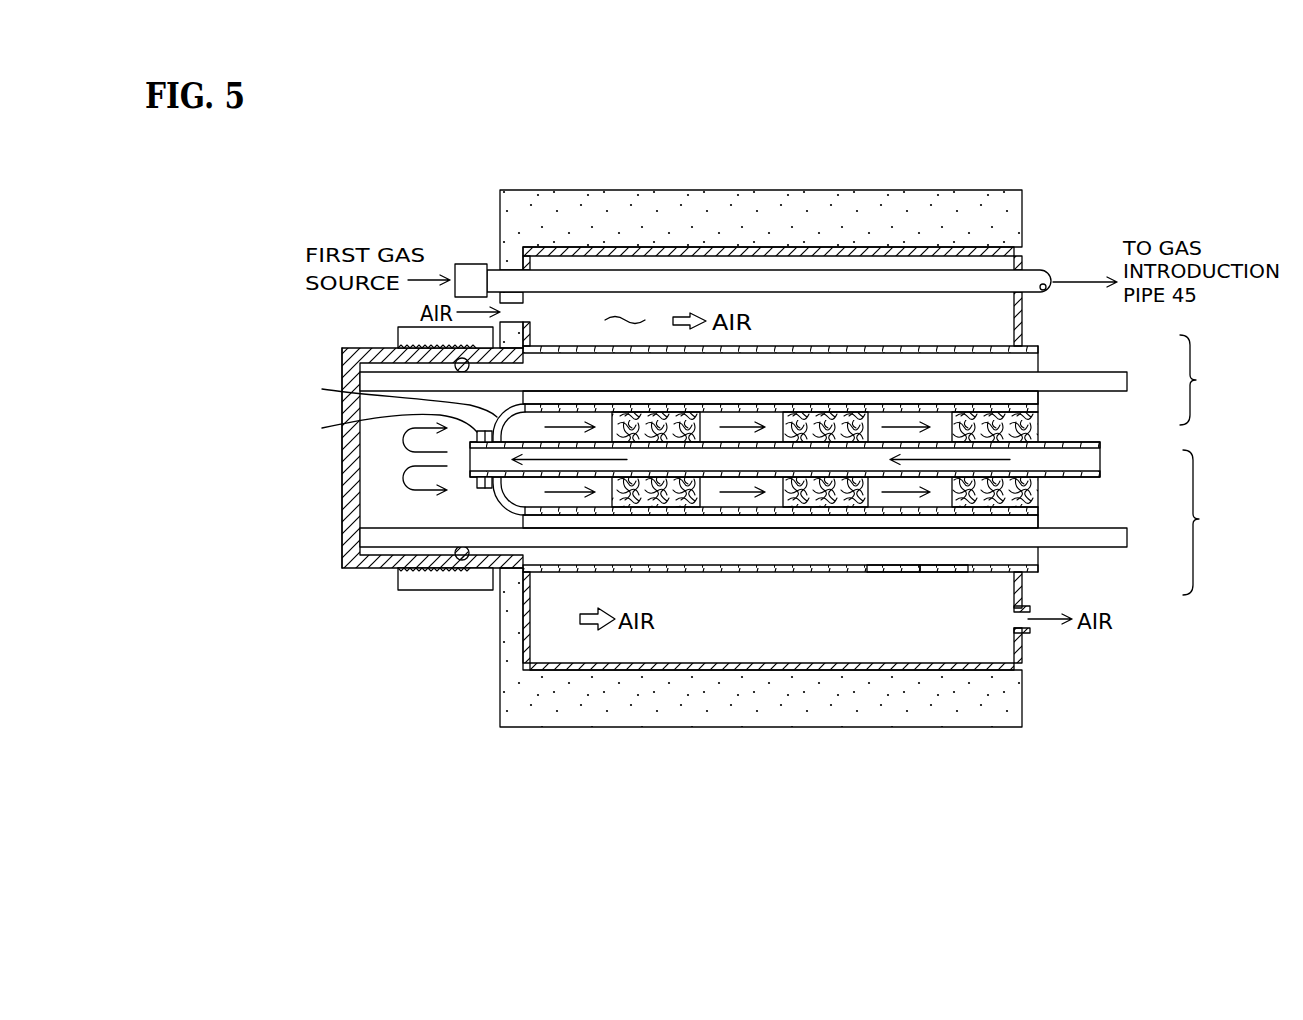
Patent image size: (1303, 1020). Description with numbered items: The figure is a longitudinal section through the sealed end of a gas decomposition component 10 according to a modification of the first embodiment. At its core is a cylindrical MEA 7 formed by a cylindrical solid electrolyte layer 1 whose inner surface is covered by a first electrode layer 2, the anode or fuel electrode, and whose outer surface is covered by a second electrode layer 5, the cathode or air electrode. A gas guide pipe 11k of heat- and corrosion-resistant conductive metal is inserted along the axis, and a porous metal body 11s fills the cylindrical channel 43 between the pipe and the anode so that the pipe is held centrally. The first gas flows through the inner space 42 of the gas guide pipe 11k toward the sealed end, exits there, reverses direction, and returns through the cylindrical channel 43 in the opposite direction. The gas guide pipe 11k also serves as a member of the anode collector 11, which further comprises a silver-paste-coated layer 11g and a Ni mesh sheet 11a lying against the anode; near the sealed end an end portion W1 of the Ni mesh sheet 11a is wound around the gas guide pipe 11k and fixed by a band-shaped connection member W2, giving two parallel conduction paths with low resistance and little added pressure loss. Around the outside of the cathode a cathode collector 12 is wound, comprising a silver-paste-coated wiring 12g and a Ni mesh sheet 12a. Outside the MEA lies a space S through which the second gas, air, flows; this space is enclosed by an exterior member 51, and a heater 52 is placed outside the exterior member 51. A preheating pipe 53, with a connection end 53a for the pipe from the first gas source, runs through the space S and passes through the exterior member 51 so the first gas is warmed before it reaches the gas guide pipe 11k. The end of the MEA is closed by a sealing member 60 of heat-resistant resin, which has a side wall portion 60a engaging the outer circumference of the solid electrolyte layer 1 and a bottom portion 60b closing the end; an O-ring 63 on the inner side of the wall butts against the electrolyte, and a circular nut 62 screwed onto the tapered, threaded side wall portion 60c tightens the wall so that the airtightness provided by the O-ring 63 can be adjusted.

The solid electrolyte layer 1 is at (1131, 381).
The first electrode layer (anode) 2 is at (1040, 396).
The second electrode layer (cathode) 5 is at (1040, 360).
The cylindrical MEA 7 is at (1199, 380).
The gas decomposition component 10 is at (1112, 338).
The anode collector 11 is at (1204, 522).
The gas guide pipe 11k is at (1100, 447).
The porous metal body 11s is at (1040, 490).
The Ni mesh sheet 11a is at (1040, 508).
The silver-paste-coated layer 11g is at (1015, 515).
The cathode collector 12 is at (968, 615).
The silver-paste-coated wiring 12g is at (920, 585).
The Ni mesh sheet 12a is at (947, 573).
The inner space 42 is at (778, 462).
The cylindrical channel 43 is at (707, 495).
The exterior member 51 is at (715, 249).
The heater 52 is at (770, 215).
The preheating pipe 53 is at (655, 268).
The connection end 53a is at (463, 262).
The sealing member 60 is at (347, 653).
The side wall portion 60a is at (363, 569).
The bottom portion 60b is at (340, 548).
The side wall portion 60c is at (415, 569).
The circular nut 62 is at (433, 581).
The O-ring 63 is at (470, 567).
The end portion W1 is at (396, 391).
The band-shaped connection member W2 is at (386, 425).
The space S is at (613, 321).